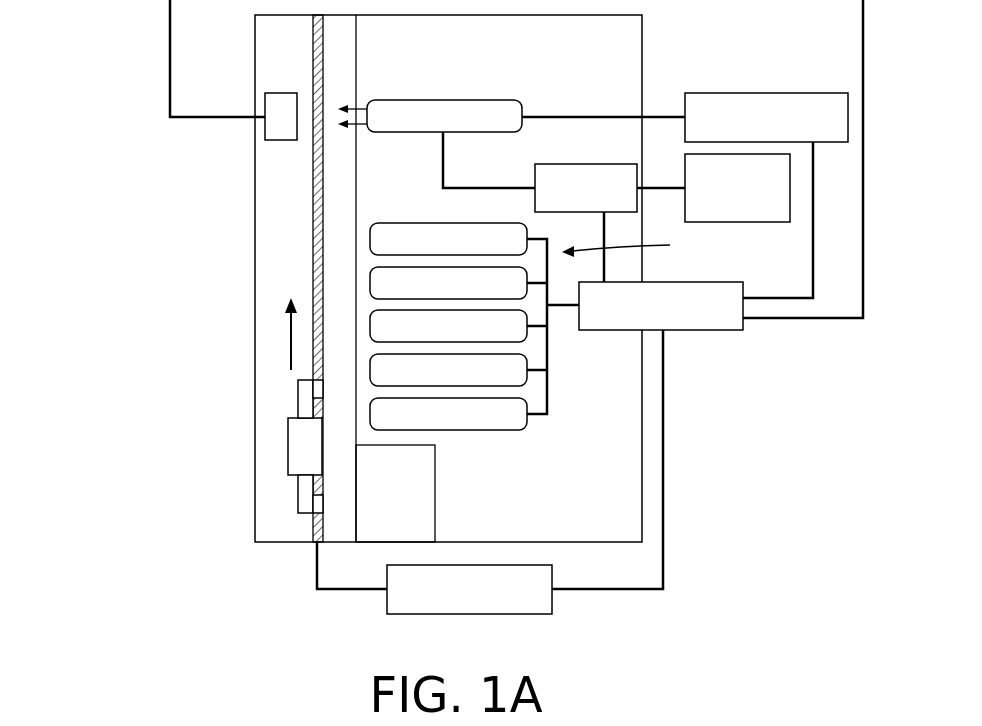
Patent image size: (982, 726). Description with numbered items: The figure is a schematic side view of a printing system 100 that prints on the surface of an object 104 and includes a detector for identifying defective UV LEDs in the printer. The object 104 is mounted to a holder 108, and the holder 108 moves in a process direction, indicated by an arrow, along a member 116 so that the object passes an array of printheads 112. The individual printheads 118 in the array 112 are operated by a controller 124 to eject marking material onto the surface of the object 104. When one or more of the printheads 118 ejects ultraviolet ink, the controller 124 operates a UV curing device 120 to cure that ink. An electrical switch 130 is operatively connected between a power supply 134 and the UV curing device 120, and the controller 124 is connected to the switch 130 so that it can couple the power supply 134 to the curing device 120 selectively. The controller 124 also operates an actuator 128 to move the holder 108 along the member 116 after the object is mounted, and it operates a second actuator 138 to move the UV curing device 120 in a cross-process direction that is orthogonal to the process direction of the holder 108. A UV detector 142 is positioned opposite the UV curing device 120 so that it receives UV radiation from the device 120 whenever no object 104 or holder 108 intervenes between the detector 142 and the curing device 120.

The printing system 100 is at (95, 105).
The object 104 is at (288, 433).
The holder 108 is at (298, 498).
The array of printheads 112 is at (638, 250).
The member 116 is at (313, 48).
The printheads 118 is at (465, 412).
The UV curing device 120 is at (448, 100).
The controller 124 is at (690, 332).
The actuator 128 is at (470, 614).
The electrical switch 130 is at (585, 164).
The power supply 134 is at (765, 222).
The actuator 138 is at (768, 93).
The UV detector 142 is at (282, 140).